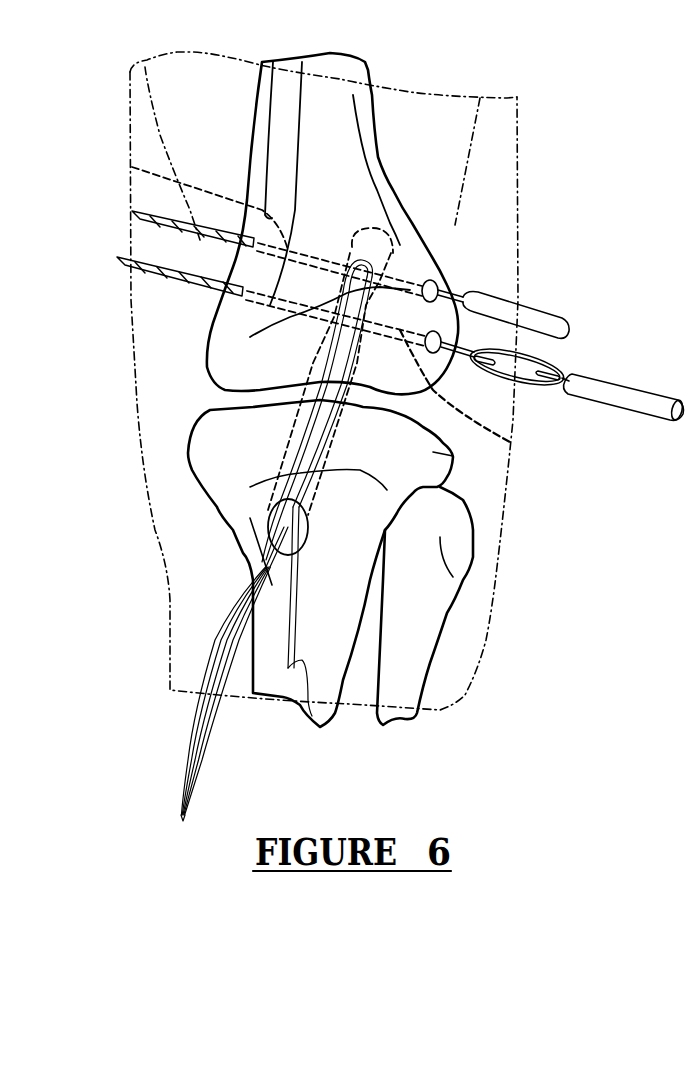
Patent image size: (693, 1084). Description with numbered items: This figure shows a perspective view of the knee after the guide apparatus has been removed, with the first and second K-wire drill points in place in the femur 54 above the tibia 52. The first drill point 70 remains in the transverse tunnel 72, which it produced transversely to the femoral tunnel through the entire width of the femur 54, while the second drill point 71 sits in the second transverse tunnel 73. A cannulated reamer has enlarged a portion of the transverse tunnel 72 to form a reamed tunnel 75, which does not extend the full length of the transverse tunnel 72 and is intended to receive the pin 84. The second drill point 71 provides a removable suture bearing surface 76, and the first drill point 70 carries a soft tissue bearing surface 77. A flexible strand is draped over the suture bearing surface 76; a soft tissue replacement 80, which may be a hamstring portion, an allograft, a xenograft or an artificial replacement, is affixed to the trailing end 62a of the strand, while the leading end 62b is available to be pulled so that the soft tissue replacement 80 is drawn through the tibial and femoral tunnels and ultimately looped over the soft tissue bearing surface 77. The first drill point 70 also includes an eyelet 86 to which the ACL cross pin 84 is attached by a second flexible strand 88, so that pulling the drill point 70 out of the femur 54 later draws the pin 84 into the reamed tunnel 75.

The tibia 52 is at (447, 455).
The femur 54 is at (383, 207).
The trailing end 62a is at (270, 537).
The leading end 62b is at (307, 692).
The first drill bit or point 70 is at (125, 267).
The second drill bit or point 71 is at (453, 290).
The transverse tunnel 72 is at (295, 314).
The second transverse tunnel 73 is at (132, 167).
The reamed tunnel 75 is at (510, 442).
The suture bearing surface 76 is at (374, 268).
The soft tissue bearing surface 77 is at (305, 370).
The soft tissue replacement 80 is at (193, 723).
The ACL cross pin 84 is at (603, 387).
The eyelet 86 is at (473, 353).
The second flexible strand 88 is at (520, 385).